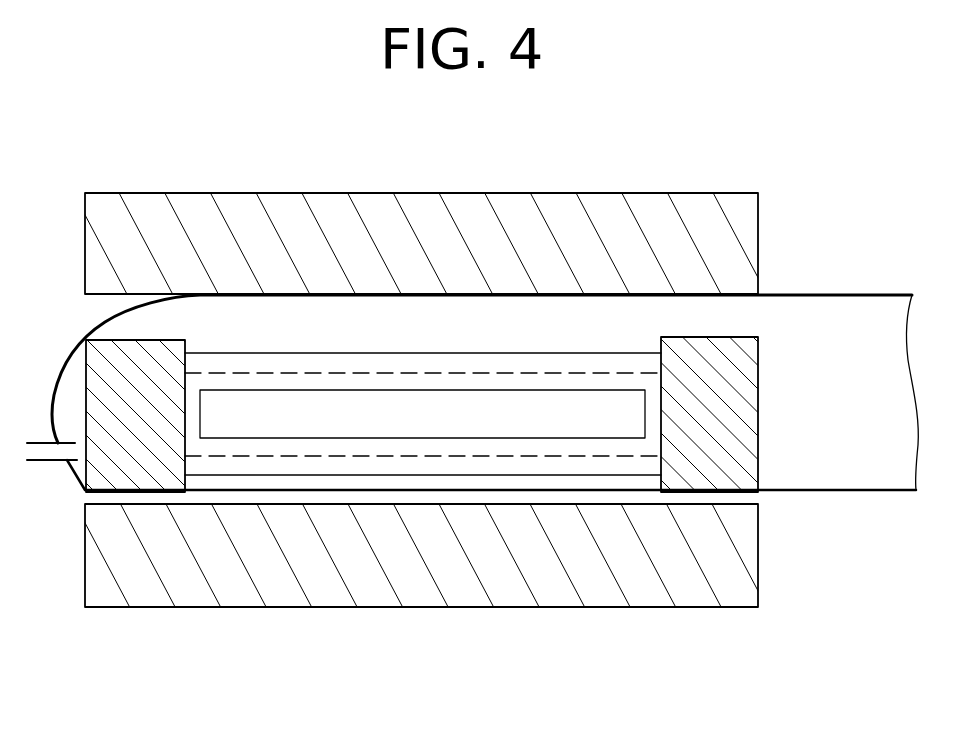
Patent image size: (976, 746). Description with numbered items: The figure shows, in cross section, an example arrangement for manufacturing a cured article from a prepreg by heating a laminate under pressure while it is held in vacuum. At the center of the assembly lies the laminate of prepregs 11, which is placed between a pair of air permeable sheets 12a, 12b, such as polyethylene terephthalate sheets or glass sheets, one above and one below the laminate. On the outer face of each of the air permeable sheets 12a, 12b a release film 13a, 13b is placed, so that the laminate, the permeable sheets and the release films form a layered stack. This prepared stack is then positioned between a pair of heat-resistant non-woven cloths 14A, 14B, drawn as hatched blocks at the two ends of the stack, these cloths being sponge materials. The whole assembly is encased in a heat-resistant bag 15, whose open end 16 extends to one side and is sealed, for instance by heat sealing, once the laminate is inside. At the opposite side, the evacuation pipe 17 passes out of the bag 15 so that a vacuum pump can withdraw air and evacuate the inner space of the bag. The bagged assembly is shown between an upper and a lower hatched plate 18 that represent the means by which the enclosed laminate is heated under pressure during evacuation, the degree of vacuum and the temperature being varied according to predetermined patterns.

The laminate of prepregs 11 is at (273, 420).
The air permeable sheet 12a is at (443, 373).
The air permeable sheet 12b is at (458, 457).
The release film 13a is at (545, 353).
The release film 13b is at (563, 475).
The heat-resistant non-woven cloth 14A is at (126, 368).
The heat-resistant non-woven cloth 14B is at (743, 353).
The heat-resistant bag 15 is at (78, 319).
The open end 16 is at (820, 478).
The evacuation pipe 17 is at (37, 462).
The pressing plate 18 is at (380, 240).